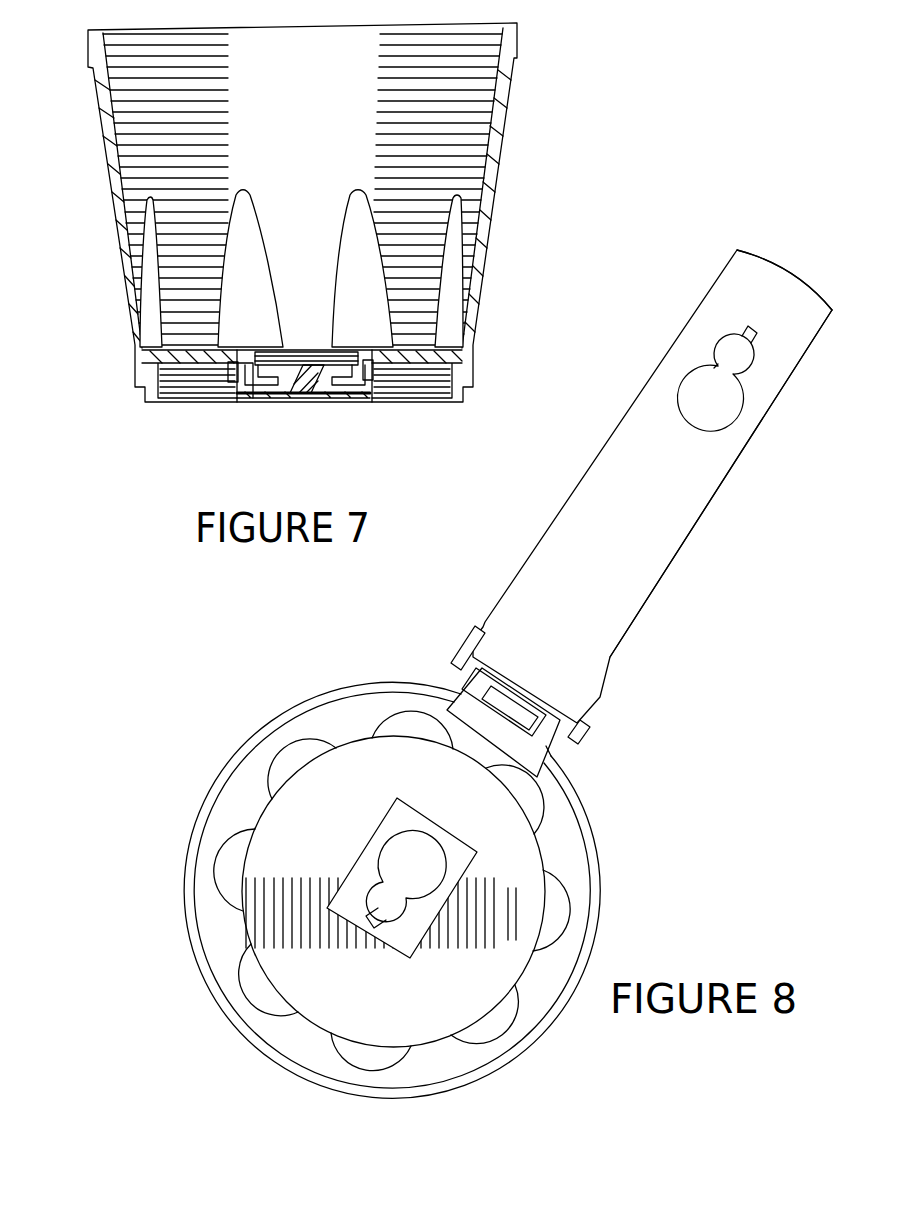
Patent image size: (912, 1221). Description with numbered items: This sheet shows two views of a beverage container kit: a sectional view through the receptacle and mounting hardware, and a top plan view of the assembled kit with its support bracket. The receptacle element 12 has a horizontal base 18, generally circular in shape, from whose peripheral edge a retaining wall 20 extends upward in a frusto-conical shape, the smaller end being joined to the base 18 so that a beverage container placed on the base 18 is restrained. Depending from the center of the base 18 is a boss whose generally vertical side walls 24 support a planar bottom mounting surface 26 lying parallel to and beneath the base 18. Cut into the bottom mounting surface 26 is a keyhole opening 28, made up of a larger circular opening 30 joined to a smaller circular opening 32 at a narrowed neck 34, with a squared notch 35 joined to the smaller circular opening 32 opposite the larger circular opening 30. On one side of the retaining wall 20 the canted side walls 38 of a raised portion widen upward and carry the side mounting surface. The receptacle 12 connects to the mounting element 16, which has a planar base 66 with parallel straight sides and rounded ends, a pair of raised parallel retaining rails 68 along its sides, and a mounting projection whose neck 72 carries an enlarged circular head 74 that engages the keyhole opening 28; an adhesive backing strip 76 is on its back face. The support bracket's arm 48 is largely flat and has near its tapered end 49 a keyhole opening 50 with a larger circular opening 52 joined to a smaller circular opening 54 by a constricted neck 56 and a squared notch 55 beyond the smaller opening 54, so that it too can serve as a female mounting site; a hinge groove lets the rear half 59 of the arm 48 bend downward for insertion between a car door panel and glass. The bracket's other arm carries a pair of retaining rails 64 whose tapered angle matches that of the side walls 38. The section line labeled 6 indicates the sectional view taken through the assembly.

In FIG. 8, the section line 6 is at (807, 235).
In FIG. 7, the receptacle element 12 is at (510, 70).
In FIG. 8, the receptacle element 12 is at (602, 883).
In FIG. 7, the mounting element 16 is at (373, 378).
In FIG. 7, the horizontal base 18 is at (442, 347).
In FIG. 8, the horizontal base 18 is at (422, 1038).
In FIG. 7, the retaining wall 20 is at (100, 105).
In FIG. 7, the vertical side walls 24 is at (262, 333).
In FIG. 7, the bottom mounting surface 26 is at (343, 368).
In FIG. 8, the bottom mounting surface 26 is at (402, 815).
In FIG. 8, the keyhole opening 28 is at (380, 870).
In FIG. 8, the larger circular opening 30 is at (430, 858).
In FIG. 8, the smaller circular opening 32 is at (430, 950).
In FIG. 8, the narrowed neck 34 is at (375, 886).
In FIG. 8, the squared notch 35 is at (378, 928).
In FIG. 8, the side walls 38 is at (455, 680).
In FIG. 8, the arm 48 is at (627, 587).
In FIG. 8, the end 49 is at (795, 272).
In FIG. 8, the keyhole opening 50 is at (740, 397).
In FIG. 8, the larger circular opening 52 is at (690, 398).
In FIG. 8, the smaller circular opening 54 is at (692, 325).
In FIG. 8, the squared notch 55 is at (748, 330).
In FIG. 8, the constricted neck 56 is at (712, 364).
In FIG. 8, the rear half of the arm 59 is at (665, 503).
In FIG. 8, the retaining rails 64 is at (463, 650).
In FIG. 7, the planar base 66 is at (235, 397).
In FIG. 7, the retaining rails 68 is at (237, 375).
In FIG. 7, the neck 72 is at (290, 390).
In FIG. 7, the enlarged circular head 74 is at (310, 353).
In FIG. 7, the adhesive backing strip 76 is at (310, 398).